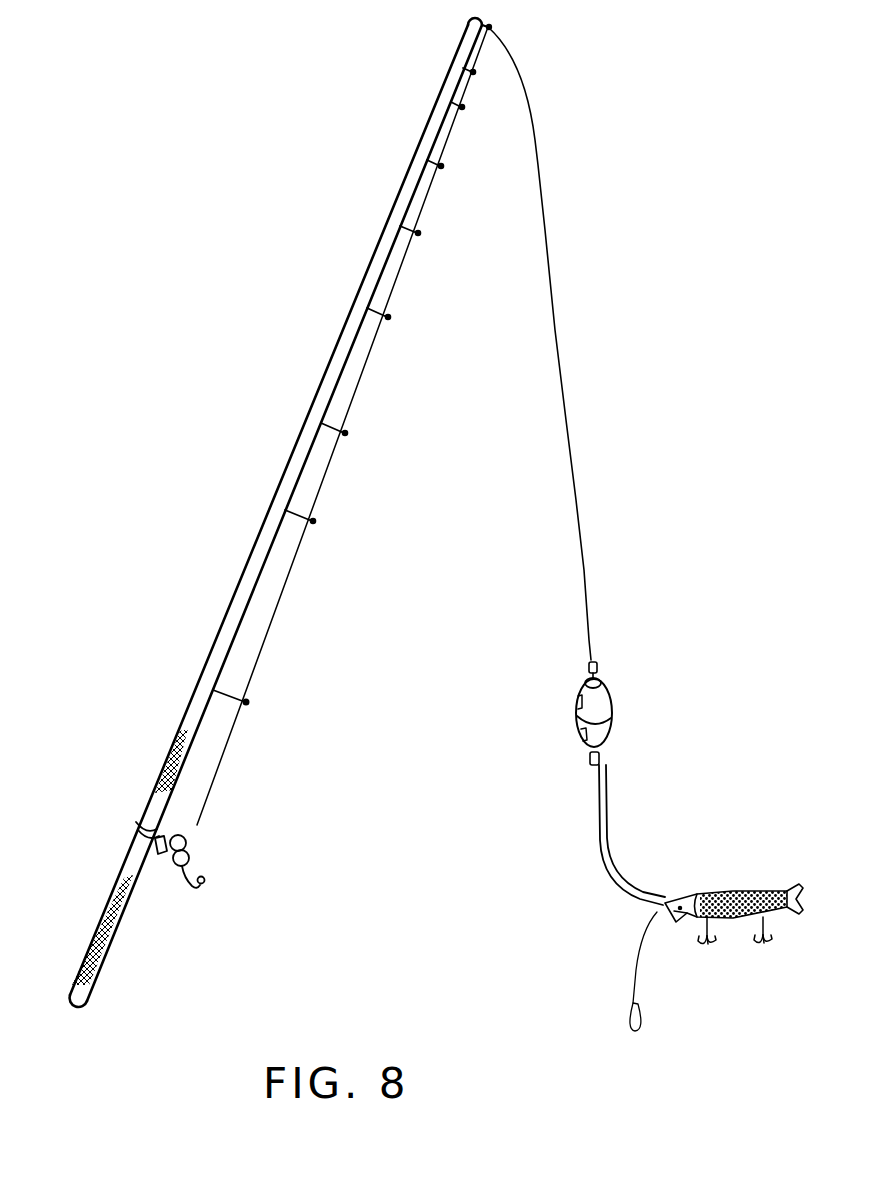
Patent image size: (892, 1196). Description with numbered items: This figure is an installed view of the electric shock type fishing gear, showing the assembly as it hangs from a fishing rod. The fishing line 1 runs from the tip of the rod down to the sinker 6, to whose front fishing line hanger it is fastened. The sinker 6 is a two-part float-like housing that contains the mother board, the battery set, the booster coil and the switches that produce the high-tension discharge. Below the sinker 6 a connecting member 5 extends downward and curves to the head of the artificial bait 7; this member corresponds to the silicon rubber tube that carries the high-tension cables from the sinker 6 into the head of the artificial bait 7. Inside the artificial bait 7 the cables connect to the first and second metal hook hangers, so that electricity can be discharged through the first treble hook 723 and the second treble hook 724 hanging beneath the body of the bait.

The fishing line 1 is at (560, 330).
The leader / connecting line 5 is at (598, 848).
The sinker 6 is at (607, 693).
The artificial bait 7 is at (740, 891).
The first treble hook 723 is at (707, 944).
The second treble hook 724 is at (764, 943).